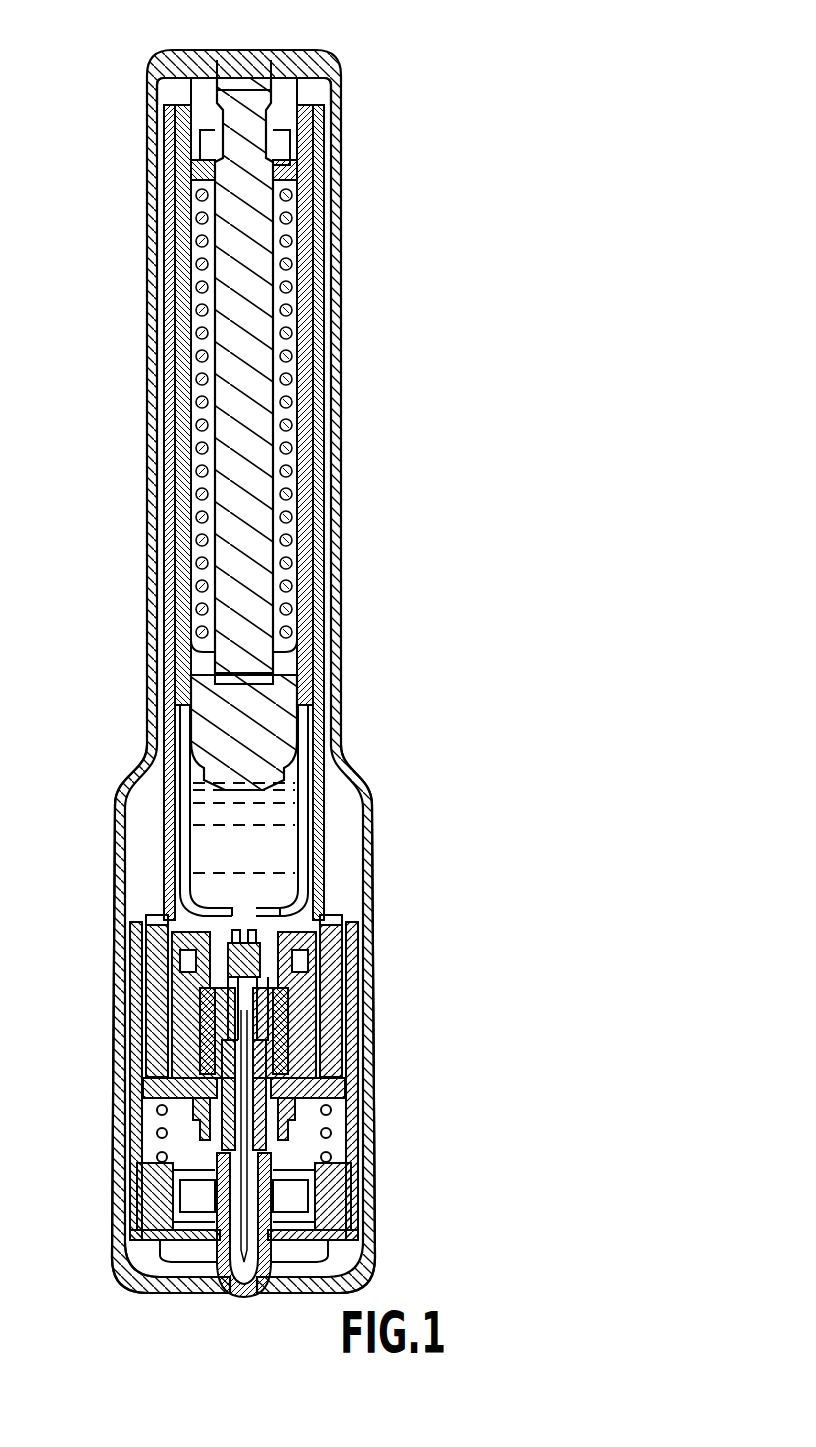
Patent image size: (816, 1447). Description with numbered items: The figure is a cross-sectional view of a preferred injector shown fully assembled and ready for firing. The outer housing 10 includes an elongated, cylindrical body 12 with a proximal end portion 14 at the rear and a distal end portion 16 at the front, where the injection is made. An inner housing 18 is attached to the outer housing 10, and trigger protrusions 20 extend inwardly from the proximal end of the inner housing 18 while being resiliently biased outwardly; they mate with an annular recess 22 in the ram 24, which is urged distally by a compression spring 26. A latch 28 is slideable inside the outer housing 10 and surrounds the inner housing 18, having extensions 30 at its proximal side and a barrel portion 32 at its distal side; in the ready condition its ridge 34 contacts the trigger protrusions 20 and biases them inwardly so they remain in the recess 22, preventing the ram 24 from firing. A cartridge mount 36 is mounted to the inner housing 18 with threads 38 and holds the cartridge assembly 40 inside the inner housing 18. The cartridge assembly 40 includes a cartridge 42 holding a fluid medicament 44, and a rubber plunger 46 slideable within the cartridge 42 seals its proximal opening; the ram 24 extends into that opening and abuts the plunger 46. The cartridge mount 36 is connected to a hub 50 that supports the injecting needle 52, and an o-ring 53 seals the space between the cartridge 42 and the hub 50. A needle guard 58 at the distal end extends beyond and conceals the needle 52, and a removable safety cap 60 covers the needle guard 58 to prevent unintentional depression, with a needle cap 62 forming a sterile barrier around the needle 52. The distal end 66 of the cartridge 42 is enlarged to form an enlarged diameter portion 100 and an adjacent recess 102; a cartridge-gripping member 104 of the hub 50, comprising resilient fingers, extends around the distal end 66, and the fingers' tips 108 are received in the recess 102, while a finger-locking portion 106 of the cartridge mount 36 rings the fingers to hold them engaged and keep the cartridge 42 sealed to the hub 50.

The outer housing 10 is at (150, 374).
The body 12 is at (344, 446).
The proximal end portion 14 is at (158, 82).
The distal end portion 16 is at (374, 1062).
The inner housing 18 is at (322, 214).
The trigger protrusions 20 is at (286, 76).
The annular recess 22 is at (274, 144).
The ram 24 is at (254, 338).
The compression spring 26 is at (200, 219).
The latch 28 is at (320, 266).
The extensions 30 is at (166, 818).
The barrel portion 32 is at (166, 292).
The ridge 34 is at (312, 108).
The cartridge mount 36 is at (320, 1096).
The threads 38 is at (290, 1020).
The cartridge assembly 40 is at (287, 860).
The cartridge 42 is at (188, 507).
The medicament 44 is at (280, 797).
The plunger 46 is at (280, 697).
The hub 50 is at (205, 1086).
The injecting needle 52 is at (270, 1222).
The o-ring 53 is at (215, 1005).
The needle guard 58 is at (196, 1247).
The safety cap 60 is at (122, 1242).
The needle cap 62 is at (312, 1170).
The distal end 66 is at (210, 966).
The enlarged diameter portion 100 is at (272, 992).
The recess 102 is at (298, 918).
The cartridge-gripping member 104 is at (165, 932).
The finger-locking portion 106 is at (300, 960).
The tips 108 is at (318, 928).